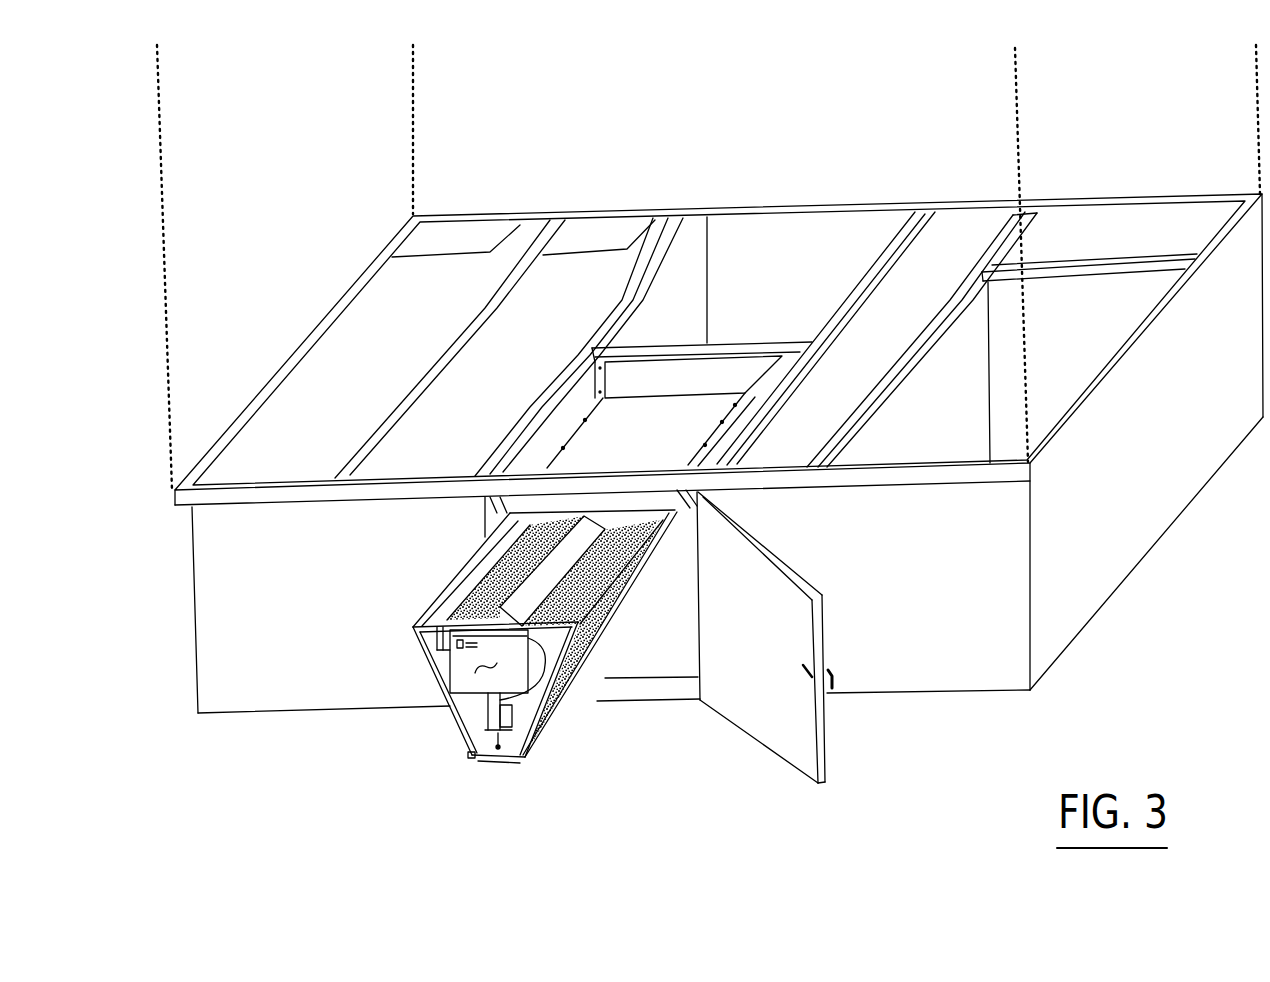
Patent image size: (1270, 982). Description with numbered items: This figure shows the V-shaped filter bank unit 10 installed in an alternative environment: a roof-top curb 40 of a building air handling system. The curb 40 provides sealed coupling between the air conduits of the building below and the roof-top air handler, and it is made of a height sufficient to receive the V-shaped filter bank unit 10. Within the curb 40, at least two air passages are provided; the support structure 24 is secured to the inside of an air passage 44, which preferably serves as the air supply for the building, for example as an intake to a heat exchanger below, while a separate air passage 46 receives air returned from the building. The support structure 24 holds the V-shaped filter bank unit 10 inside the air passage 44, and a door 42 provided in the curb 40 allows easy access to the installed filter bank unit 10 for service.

The V-shaped filter bank unit 10 is at (516, 762).
The support structure 24 is at (704, 388).
The curb 40 is at (1138, 600).
The door 42 is at (781, 722).
The air passage 44 is at (651, 430).
The air passage for receiving air returned from the building 46 is at (1089, 358).